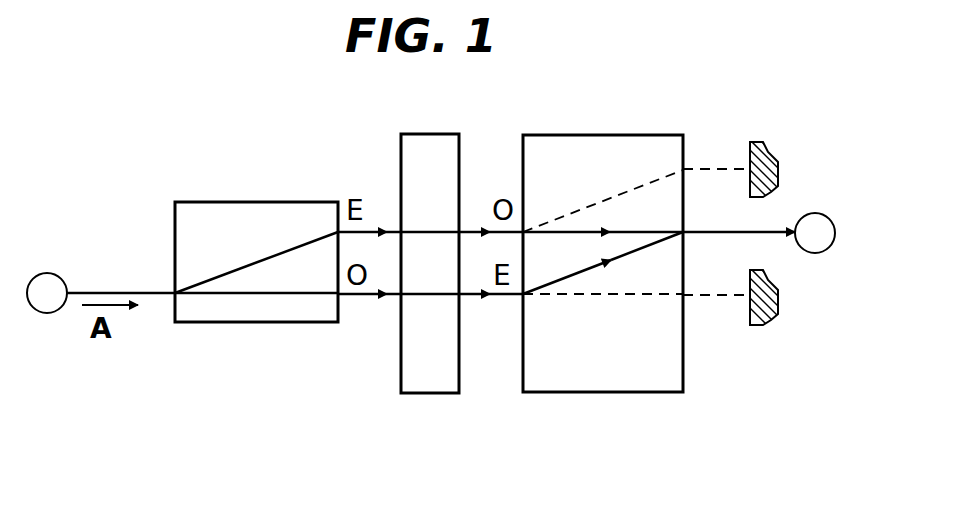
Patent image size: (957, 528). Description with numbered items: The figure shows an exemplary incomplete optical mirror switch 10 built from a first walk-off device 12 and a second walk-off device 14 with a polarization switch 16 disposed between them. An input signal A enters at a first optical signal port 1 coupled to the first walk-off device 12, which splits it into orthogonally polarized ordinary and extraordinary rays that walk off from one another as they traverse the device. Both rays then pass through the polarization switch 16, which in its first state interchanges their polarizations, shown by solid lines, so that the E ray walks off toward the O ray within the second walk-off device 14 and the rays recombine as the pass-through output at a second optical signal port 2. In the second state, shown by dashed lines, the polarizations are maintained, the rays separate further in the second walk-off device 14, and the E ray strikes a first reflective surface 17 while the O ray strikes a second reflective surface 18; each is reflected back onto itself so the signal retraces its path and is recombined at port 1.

The first optical signal port 1 is at (101, 293).
The second optical signal port 2 is at (759, 233).
The optical mirror switch 10 is at (210, 410).
The first walk-off device 12 is at (222, 202).
The second walk-off device 14 is at (620, 135).
The polarization switch 16 is at (401, 170).
The first reflective surface 17 is at (763, 152).
The second reflective surface 18 is at (763, 317).